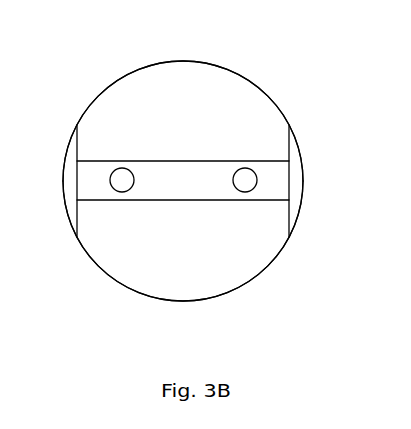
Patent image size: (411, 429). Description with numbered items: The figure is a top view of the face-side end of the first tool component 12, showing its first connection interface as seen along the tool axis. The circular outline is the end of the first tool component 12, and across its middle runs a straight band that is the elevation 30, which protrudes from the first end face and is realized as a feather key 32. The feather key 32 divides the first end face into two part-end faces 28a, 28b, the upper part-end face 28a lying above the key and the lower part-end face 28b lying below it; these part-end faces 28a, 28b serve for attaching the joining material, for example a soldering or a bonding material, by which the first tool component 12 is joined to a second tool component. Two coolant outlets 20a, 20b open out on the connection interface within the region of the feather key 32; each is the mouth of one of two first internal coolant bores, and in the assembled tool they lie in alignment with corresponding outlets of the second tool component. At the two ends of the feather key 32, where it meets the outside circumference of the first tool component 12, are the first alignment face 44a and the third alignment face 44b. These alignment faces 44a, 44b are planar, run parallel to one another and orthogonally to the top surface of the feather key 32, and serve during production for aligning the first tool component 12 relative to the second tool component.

The first tool component 12 is at (250, 81).
The first part-end face 28a is at (185, 88).
The second part-end face 28b is at (188, 289).
The elevation 30 is at (214, 163).
The feather key 32 is at (280, 180).
The first alignment face 44a is at (77, 213).
The third alignment face 44b is at (289, 210).
The first coolant outlet 20a is at (122, 183).
The first coolant outlet 20b is at (245, 183).